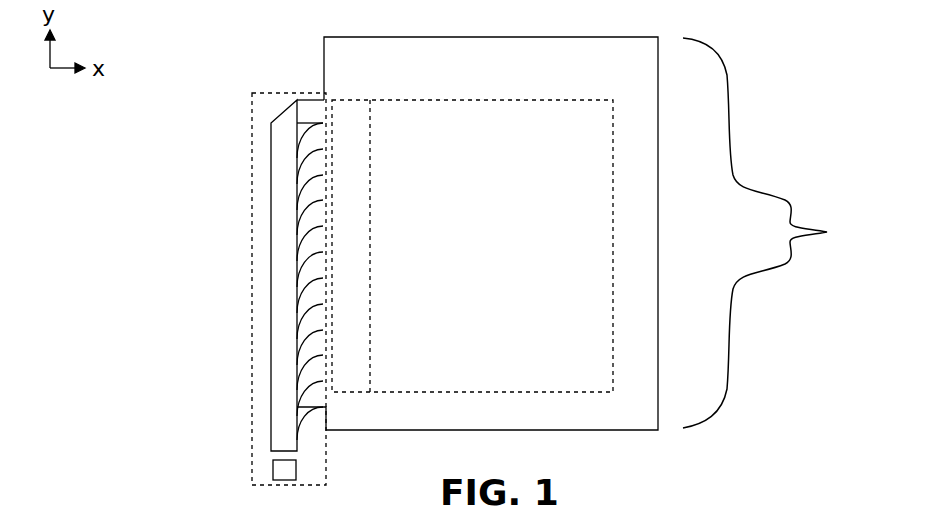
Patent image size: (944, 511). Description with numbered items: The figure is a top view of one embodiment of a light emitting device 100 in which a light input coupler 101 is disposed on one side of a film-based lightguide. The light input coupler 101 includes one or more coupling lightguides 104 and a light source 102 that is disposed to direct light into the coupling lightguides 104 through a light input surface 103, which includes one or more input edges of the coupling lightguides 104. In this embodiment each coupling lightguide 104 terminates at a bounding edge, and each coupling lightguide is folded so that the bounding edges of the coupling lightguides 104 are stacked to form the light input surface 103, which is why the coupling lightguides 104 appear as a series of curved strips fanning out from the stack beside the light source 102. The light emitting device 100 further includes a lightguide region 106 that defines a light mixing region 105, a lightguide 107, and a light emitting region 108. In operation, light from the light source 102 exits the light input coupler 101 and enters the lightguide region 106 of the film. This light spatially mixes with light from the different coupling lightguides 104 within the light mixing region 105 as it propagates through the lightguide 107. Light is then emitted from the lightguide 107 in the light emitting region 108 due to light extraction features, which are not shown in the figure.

The light emitting device 100 is at (273, 41).
The light input coupler 101 is at (252, 415).
The light source 102 is at (284, 470).
The light input surface 103 is at (286, 452).
The coupling lightguides 104 is at (310, 133).
The light mixing region 105 is at (343, 115).
The lightguide region 106 is at (777, 233).
The lightguide 107 is at (633, 217).
The light emitting region 108 is at (593, 269).